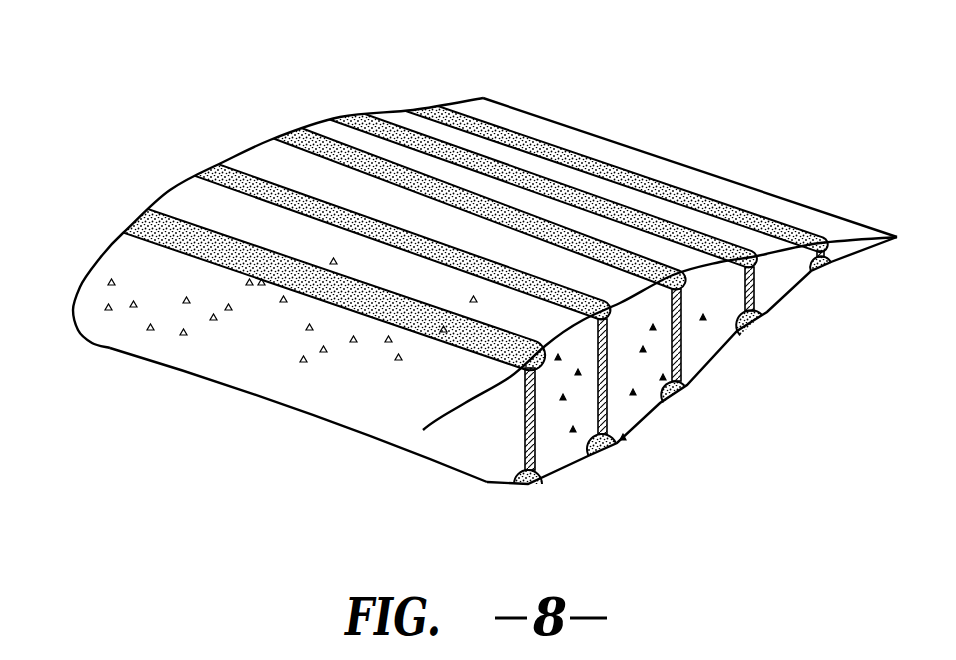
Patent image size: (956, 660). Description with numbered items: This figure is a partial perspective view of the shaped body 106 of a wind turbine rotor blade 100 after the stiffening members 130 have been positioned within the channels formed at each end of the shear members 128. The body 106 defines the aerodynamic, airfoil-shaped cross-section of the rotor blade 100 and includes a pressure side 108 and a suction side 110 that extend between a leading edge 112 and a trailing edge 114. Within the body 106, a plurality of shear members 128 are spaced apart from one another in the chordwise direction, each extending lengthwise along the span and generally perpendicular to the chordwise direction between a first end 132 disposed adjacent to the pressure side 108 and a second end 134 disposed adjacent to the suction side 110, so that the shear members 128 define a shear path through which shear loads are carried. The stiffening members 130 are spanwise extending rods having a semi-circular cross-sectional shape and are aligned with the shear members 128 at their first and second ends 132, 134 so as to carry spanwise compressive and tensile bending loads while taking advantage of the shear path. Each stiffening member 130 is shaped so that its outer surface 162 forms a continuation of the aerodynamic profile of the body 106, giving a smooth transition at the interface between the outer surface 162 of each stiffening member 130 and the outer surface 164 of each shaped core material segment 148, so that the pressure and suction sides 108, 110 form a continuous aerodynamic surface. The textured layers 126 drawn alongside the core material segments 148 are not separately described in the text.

The rotor blade 100 is at (485, 281).
The body 106 is at (293, 377).
The pressure side 108 is at (640, 434).
The suction side 110 is at (273, 163).
The leading edge 112 is at (470, 450).
The trailing edge 114 is at (893, 236).
The fiber reinforced layer 126 is at (182, 200).
The shear member 128 is at (594, 407).
The stiffening member 130 is at (133, 218).
The first end 132 is at (518, 442).
The second end 134 is at (423, 430).
The shaped core material segment 148 is at (414, 247).
The outer surface 162 is at (530, 277).
The outer surface 164 is at (497, 185).